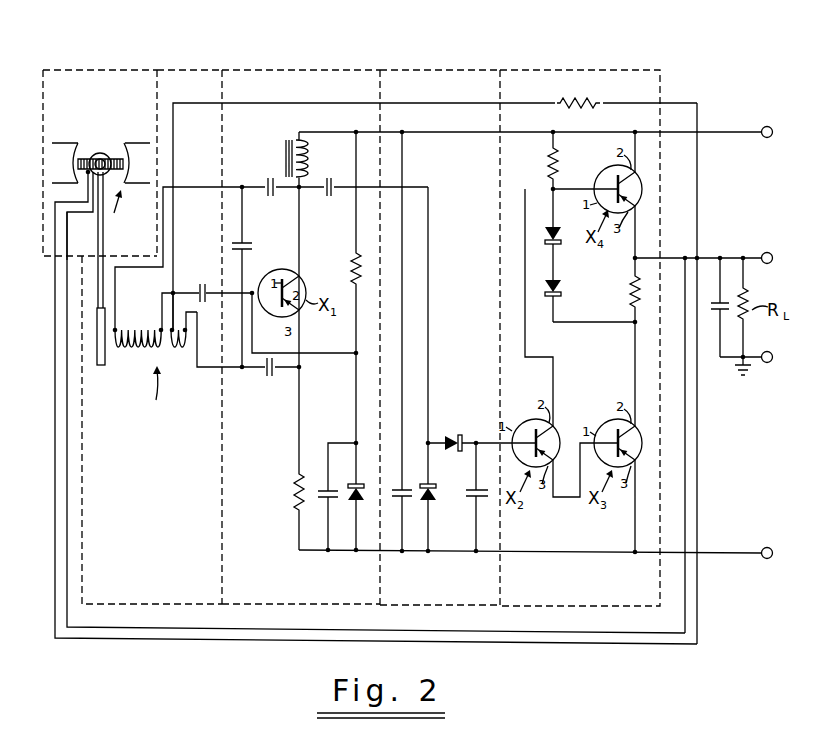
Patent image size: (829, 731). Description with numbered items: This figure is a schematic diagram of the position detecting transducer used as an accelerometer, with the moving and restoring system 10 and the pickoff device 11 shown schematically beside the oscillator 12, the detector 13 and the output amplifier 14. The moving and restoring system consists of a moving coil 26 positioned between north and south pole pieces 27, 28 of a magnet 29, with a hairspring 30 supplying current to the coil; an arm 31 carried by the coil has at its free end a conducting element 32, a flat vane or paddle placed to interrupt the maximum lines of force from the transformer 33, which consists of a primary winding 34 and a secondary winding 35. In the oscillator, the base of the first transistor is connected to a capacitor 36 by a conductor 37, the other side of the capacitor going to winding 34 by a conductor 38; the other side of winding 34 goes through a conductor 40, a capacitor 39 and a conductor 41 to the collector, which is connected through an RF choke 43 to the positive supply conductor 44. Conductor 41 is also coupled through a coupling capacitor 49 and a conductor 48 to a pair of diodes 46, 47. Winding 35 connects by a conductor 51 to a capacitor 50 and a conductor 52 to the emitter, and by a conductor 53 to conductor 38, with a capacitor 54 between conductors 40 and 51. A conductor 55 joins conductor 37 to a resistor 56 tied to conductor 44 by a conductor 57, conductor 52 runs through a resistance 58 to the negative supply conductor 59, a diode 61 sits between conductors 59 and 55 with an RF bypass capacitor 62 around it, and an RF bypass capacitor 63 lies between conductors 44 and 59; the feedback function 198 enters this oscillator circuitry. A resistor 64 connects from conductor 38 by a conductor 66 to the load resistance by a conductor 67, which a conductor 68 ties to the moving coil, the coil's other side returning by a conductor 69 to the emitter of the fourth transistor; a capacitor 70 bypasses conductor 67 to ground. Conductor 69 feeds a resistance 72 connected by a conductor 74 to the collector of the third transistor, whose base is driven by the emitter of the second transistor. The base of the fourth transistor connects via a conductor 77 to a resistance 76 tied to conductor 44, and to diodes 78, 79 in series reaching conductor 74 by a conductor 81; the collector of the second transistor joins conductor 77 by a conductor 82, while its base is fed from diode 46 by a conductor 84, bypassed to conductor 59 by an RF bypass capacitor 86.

The moving and restoring system 10 is at (112, 70).
The pickoff device 11 is at (188, 70).
The oscillator 12 is at (322, 70).
The detector 13 is at (463, 70).
The output amplifier 14 is at (600, 70).
The moving coil 26 is at (117, 150).
The north pole piece 27 is at (64, 150).
The south pole piece 28 is at (126, 208).
The magnet 29 is at (104, 232).
The hairspring 30 is at (100, 152).
The arm 31 is at (102, 242).
The conducting element 32 is at (107, 352).
The transformer 33 is at (149, 393).
The primary winding 34 is at (137, 348).
The secondary winding 35 is at (181, 348).
The capacitor 36 is at (200, 284).
The conductor 37 is at (207, 300).
The conductor 38 is at (161, 294).
The capacitor 39 is at (277, 198).
The conductor 40 is at (192, 188).
The conductor 41 is at (302, 248).
The RF choke 43 is at (313, 160).
The conductor 44 is at (430, 131).
The diode 46 is at (451, 430).
The diode 47 is at (442, 494).
The conductor 48 is at (429, 305).
The coupling capacitor 49 is at (331, 199).
The capacitor 50 is at (270, 380).
The conductor 51 is at (212, 388).
The conductor 52 is at (302, 334).
The conductor 53 is at (178, 300).
The capacitor 54 is at (254, 246).
The conductor 55 is at (316, 356).
The resistor 56 is at (352, 264).
The conductor 57 is at (354, 169).
The resistance 58 is at (294, 483).
The conductor 59 is at (343, 554).
The diode 61 is at (355, 483).
The RF bypass capacitor 62 is at (313, 499).
The RF bypass capacitor 63 is at (412, 488).
The resistor 64 is at (595, 101).
The conductor 66 is at (328, 102).
The conductor 67 is at (700, 120).
The conductor 68 is at (699, 460).
The conductor 69 is at (683, 460).
The capacitor 70 is at (709, 306).
The resistance 72 is at (630, 297).
The conductor 74 is at (632, 368).
The resistance 76 is at (547, 163).
The conductor 77 is at (575, 188).
The diode 78 is at (567, 234).
The diode 79 is at (567, 292).
The conductor 81 is at (587, 326).
The conductor 82 is at (523, 322).
The conductor 84 is at (492, 440).
The RF bypass capacitor 86 is at (466, 496).
The feedback function 198 is at (300, 385).